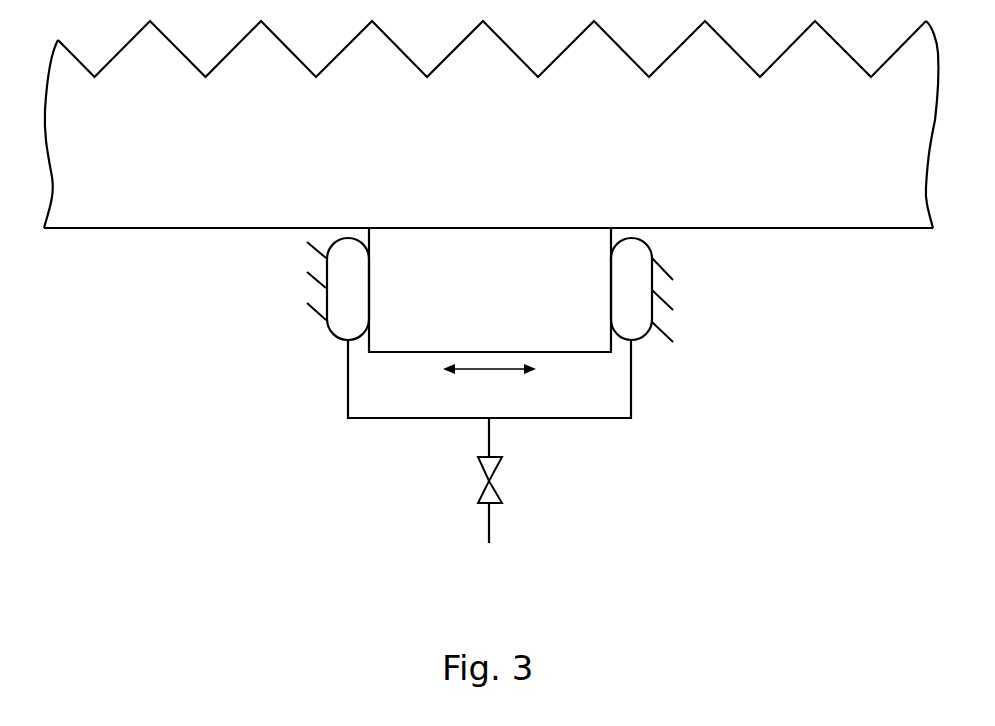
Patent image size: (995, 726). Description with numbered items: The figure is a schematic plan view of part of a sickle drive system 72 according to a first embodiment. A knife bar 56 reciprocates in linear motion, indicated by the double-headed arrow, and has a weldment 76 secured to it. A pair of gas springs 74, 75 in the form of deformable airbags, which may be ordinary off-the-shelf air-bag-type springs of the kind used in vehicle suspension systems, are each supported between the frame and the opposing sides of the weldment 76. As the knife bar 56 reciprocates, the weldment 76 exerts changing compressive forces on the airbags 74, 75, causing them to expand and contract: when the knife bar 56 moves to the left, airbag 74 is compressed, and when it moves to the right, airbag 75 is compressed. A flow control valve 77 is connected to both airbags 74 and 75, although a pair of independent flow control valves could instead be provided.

The knife bar 56 is at (830, 200).
The suction holding device 72 is at (552, 398).
The gas spring 74 is at (343, 328).
The gas spring 75 is at (637, 328).
The weldment 76 is at (573, 330).
The flow control valve 77 is at (487, 482).